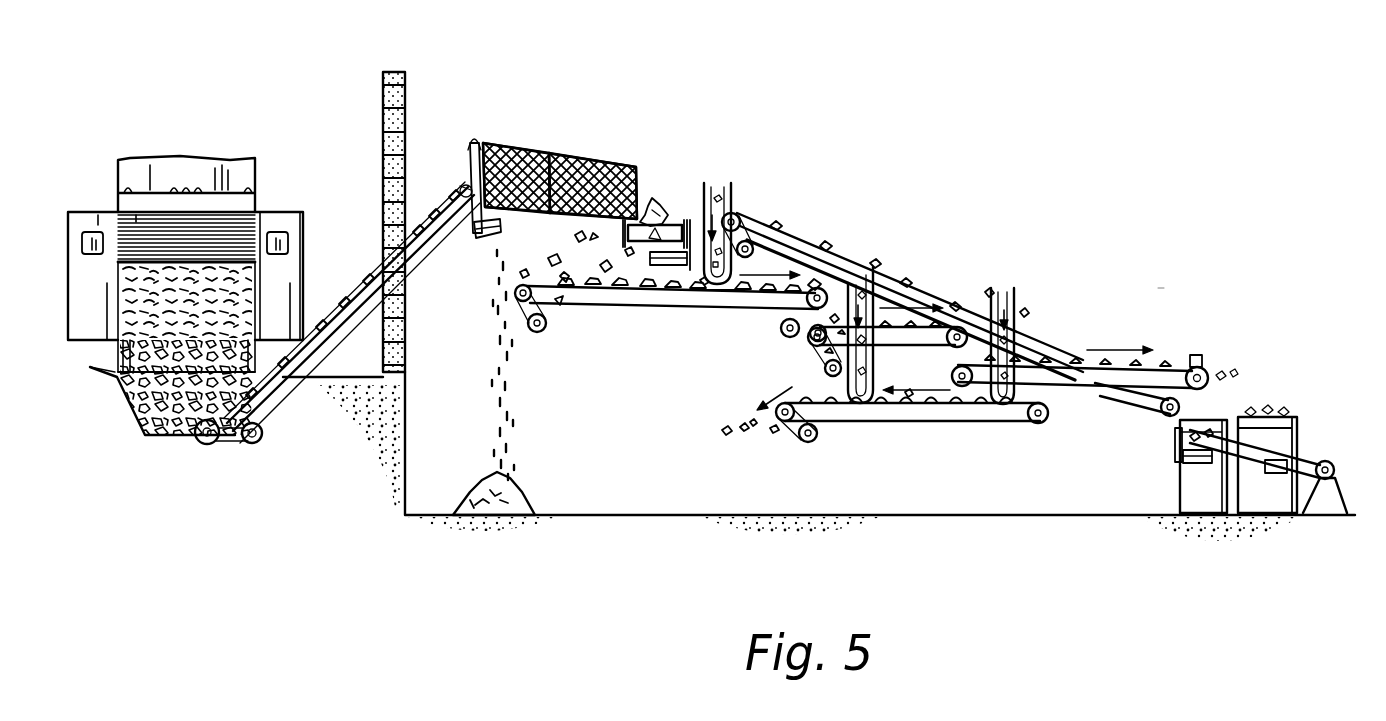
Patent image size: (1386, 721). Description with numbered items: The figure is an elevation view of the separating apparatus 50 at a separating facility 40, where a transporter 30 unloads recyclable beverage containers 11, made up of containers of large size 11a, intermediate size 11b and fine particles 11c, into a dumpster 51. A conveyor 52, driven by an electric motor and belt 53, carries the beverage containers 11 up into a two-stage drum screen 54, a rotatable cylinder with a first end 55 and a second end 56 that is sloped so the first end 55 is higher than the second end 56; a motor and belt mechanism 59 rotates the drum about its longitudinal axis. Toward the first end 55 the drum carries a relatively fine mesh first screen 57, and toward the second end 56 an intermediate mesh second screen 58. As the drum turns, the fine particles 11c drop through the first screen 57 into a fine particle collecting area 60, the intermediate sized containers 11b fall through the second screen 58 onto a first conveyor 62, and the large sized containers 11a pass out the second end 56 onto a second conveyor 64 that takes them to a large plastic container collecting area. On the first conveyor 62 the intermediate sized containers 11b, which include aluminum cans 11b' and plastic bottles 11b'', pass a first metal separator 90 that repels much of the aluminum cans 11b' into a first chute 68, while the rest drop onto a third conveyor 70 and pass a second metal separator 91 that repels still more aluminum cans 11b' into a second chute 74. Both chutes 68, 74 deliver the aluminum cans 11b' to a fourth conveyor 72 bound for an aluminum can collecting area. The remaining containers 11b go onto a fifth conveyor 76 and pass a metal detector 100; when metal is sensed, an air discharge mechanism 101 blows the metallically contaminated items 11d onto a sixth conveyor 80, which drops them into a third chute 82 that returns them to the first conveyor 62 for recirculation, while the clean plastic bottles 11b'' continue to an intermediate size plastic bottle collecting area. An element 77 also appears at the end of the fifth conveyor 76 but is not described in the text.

The recyclable beverage containers 11 is at (115, 375).
The large sized containers 11a is at (672, 214).
The intermediate sized containers 11b is at (577, 259).
The aluminum cans 11b' is at (887, 358).
The plastic bottles 11b'' is at (1165, 447).
The fine particles 11c is at (497, 364).
The metallically contaminated items 11d is at (725, 196).
The transporter 30 is at (233, 153).
The separating facility 40 is at (335, 91).
The separating apparatus 50 is at (1163, 284).
The dumpster 51 is at (125, 395).
The conveyor 52 is at (356, 316).
The electric motor and belt 53 is at (225, 440).
The two-stage drum screen 54 is at (556, 133).
The first end 55 is at (465, 150).
The second end 56 is at (648, 207).
The first screen 57 is at (522, 150).
The second screen 58 is at (590, 158).
The motor and belt mechanism 59 is at (472, 226).
The fine particle collecting area 60 is at (458, 497).
The first conveyor 62 is at (648, 310).
The second conveyor 64 is at (690, 230).
The first chute 68 is at (877, 266).
The third conveyor 70 is at (911, 320).
The fourth conveyor 72 is at (890, 415).
The second chute 74 is at (1037, 330).
The fifth conveyor 76 is at (1103, 376).
The conveyor head roller 77 is at (1184, 360).
The sixth conveyor 80 is at (853, 252).
The third chute 82 is at (717, 285).
The first metal separator 90 is at (812, 278).
The second metal separator 91 is at (955, 304).
The metal detector 100 is at (1202, 338).
The air discharge mechanism 101 is at (1260, 405).